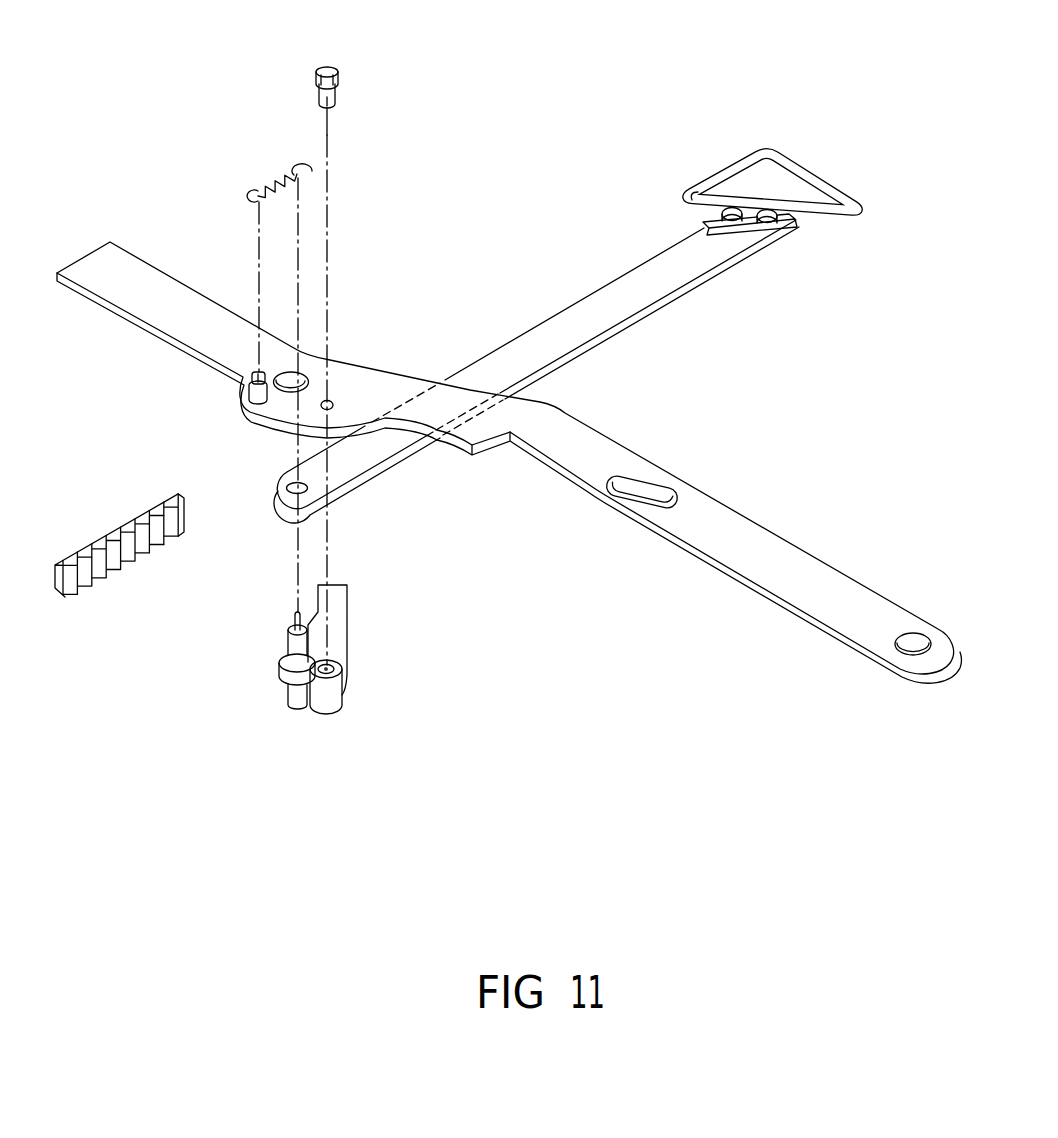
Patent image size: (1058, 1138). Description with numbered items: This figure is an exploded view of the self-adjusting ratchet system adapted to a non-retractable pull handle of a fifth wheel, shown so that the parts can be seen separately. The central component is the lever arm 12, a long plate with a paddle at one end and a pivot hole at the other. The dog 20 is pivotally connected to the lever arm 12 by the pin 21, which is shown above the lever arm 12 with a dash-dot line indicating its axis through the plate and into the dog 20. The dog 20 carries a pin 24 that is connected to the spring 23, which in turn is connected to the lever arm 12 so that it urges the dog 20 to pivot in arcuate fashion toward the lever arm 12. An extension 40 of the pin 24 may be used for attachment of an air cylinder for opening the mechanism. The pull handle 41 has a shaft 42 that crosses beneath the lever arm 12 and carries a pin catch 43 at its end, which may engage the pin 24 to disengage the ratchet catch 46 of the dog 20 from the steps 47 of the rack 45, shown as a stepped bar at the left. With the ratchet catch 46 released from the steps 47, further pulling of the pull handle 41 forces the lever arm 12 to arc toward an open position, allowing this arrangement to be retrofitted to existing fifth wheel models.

The lever arm 12 is at (812, 556).
The dog 20 is at (352, 633).
The pin 21 is at (338, 97).
The spring 23 is at (256, 196).
The pin 24 is at (288, 628).
The extension 40 is at (287, 704).
The pull handle 41 is at (812, 172).
The shaft 42 is at (708, 277).
The pin catch 43 is at (283, 479).
The rack 45 is at (118, 527).
The ratchet catch 46 is at (345, 585).
The steps 47 is at (148, 539).